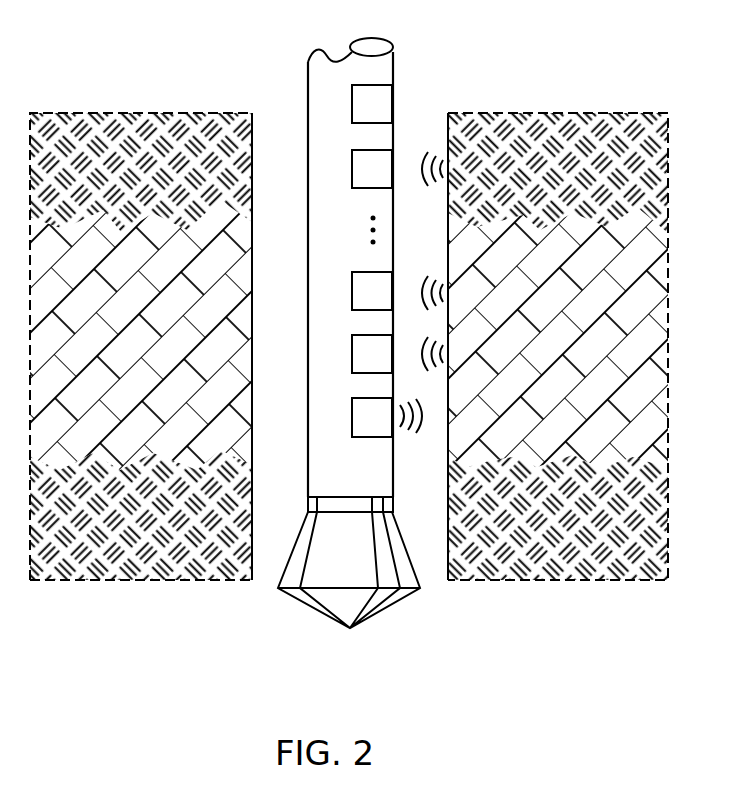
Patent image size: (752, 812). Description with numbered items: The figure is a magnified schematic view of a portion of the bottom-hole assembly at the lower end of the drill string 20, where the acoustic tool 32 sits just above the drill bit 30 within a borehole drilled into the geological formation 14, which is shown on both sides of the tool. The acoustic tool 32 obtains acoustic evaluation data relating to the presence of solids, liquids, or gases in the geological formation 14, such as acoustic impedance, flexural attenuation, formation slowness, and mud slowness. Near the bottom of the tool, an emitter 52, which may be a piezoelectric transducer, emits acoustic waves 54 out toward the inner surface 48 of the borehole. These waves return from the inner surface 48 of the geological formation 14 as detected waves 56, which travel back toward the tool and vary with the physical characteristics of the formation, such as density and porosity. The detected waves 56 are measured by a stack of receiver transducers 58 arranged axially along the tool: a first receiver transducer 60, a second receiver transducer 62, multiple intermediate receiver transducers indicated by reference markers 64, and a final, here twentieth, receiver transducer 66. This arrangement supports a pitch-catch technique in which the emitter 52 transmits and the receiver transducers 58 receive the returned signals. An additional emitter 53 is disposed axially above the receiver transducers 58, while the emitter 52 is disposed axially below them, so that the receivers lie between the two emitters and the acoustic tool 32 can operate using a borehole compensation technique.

The geological formation 14 is at (622, 318).
The drill string 20 is at (328, 72).
The drill bit 30 is at (350, 570).
The acoustic tool 32 is at (367, 488).
The inner surface 48 is at (433, 124).
The emitter 52 is at (368, 438).
The additional emitter 53 is at (352, 107).
The acoustic waves 54 is at (424, 450).
The detected waves 56 is at (412, 145).
The receiver transducers 58 is at (357, 195).
The first receiver transducer 60 is at (362, 335).
The second receiver transducer 62 is at (375, 272).
The reference markers 64 is at (384, 212).
The final receiver transducer 66 is at (352, 172).